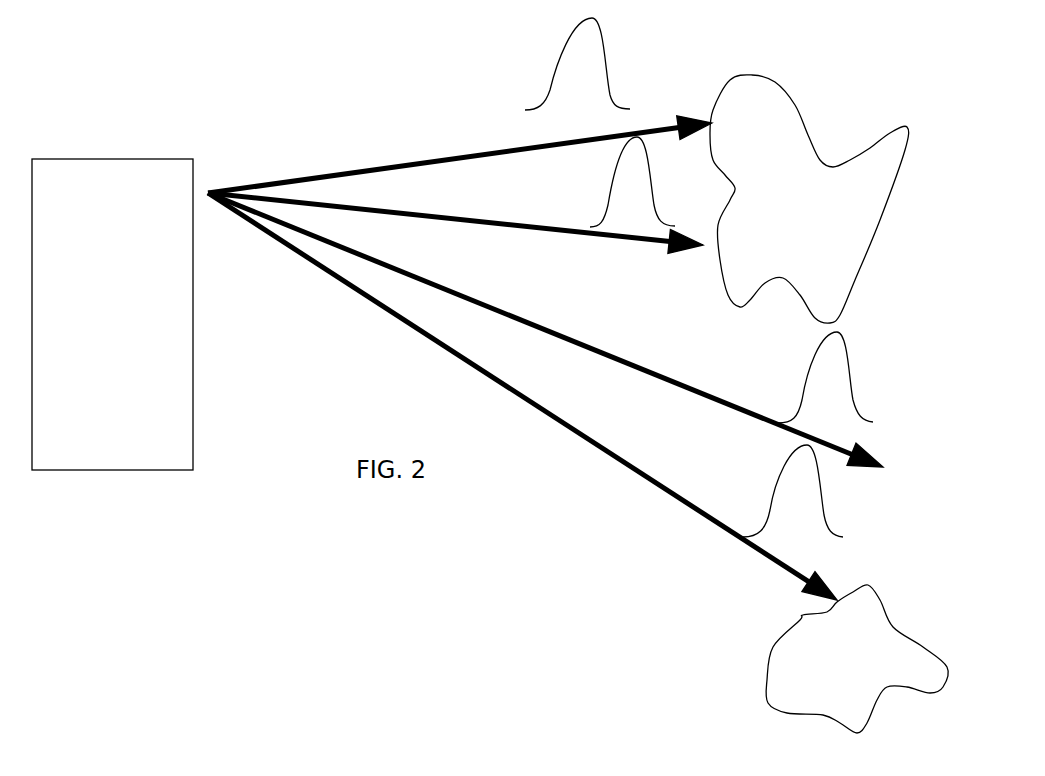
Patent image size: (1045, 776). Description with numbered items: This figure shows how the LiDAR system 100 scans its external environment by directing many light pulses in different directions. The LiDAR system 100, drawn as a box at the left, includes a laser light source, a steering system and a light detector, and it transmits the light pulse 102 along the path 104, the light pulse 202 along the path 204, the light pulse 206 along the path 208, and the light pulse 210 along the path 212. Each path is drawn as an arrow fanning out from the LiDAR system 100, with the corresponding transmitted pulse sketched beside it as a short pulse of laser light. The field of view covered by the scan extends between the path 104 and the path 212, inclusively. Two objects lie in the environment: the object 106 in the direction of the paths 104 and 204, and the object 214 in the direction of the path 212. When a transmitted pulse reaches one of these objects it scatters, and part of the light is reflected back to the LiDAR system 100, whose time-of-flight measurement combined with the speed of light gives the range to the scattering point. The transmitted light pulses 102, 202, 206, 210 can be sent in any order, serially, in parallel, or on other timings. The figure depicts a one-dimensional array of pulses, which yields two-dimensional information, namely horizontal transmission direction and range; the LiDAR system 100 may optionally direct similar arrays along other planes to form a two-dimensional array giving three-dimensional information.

The LiDAR system 100 is at (84, 236).
The light pulse 102 is at (576, 63).
The path 104 is at (458, 157).
The object 106 is at (801, 215).
The light pulse 202 is at (611, 182).
The path 204 is at (535, 225).
The light pulse 206 is at (809, 377).
The path 208 is at (527, 320).
The light pulse 210 is at (777, 491).
The path 212 is at (622, 460).
The object 214 is at (818, 672).